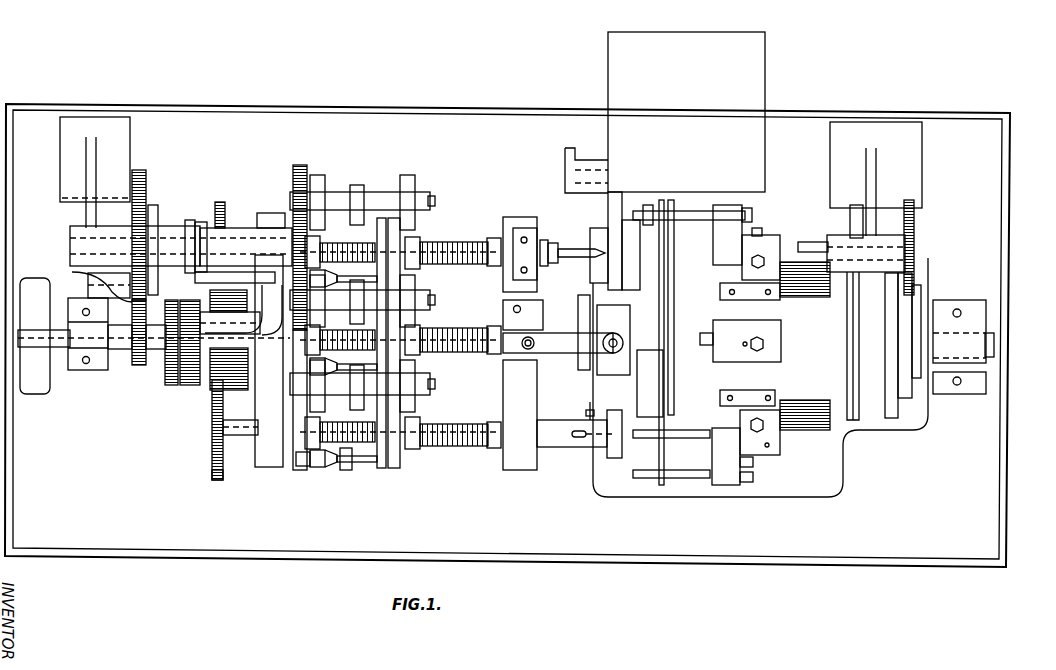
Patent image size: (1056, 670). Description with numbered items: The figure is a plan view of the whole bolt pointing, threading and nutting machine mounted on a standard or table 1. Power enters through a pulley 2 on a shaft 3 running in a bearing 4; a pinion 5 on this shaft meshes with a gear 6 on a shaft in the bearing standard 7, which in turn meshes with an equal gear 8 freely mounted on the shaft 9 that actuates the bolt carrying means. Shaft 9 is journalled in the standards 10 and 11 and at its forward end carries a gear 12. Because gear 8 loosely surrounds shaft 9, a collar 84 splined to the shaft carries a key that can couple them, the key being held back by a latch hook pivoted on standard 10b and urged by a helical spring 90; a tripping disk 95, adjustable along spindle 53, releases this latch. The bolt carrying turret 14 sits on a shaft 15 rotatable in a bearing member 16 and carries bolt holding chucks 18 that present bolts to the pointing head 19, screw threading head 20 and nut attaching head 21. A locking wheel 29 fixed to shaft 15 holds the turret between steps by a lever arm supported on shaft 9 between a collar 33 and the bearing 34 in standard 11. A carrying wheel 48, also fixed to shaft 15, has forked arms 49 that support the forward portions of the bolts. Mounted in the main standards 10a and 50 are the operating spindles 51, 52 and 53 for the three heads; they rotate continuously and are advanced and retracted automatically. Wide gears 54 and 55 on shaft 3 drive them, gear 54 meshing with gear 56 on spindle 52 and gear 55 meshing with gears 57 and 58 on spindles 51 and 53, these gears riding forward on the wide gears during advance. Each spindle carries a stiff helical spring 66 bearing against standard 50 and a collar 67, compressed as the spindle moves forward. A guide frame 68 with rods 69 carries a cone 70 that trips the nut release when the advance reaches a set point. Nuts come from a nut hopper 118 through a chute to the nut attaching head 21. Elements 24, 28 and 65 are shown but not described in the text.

The standard or table 1 is at (582, 553).
The pulley 2 is at (44, 392).
The shaft 3 is at (148, 352).
The bearing 4 is at (100, 334).
The pinion 5 is at (130, 360).
The gear 6 is at (94, 282).
The bearing standard 7 is at (88, 290).
The gear 8 is at (146, 178).
The shaft 9 is at (68, 246).
The standard 10 is at (128, 152).
The main standard 10a is at (276, 470).
The standard 10b is at (272, 216).
The standard 11 is at (912, 157).
The gear 12 is at (916, 222).
The bolt carrying turret 14 is at (806, 428).
The turret shaft 15 is at (940, 330).
The bearing member 16 is at (976, 332).
The bolt holding chuck 18 is at (727, 482).
The pointing head 19 is at (552, 420).
The screw threading head 20 is at (580, 302).
The nut attaching head 21 is at (594, 230).
The plate 24 is at (892, 420).
The plate 28 is at (908, 400).
The locking wheel 29 is at (855, 422).
The collar 33 is at (850, 222).
The bearing 34 is at (866, 253).
The carrying wheel 48 is at (674, 312).
The arm 49 is at (660, 486).
The main standard 50 is at (508, 470).
The operating spindle 51 is at (238, 436).
The operating spindle 52 is at (333, 351).
The operating spindle 53 is at (162, 242).
The wide gear 54 is at (190, 382).
The wide gear 55 is at (232, 300).
The gear 56 is at (168, 380).
The gear 57 is at (214, 480).
The gear 58 is at (222, 204).
The spindle 65 is at (366, 243).
The helical spring 66 is at (462, 262).
The collar 67 is at (422, 240).
The guide frame 68 is at (346, 470).
The rod 69 is at (334, 466).
The cone 70 is at (318, 468).
The collar 84 is at (202, 224).
The helical spring 90 is at (194, 278).
The tripping disk 95 is at (158, 210).
The nut hopper 118 is at (665, 161).